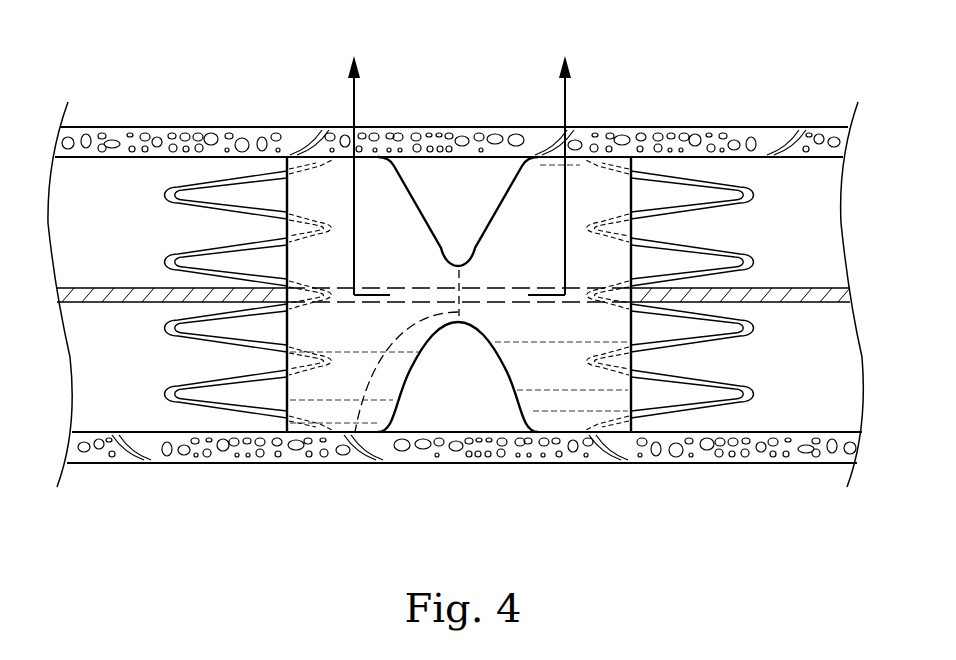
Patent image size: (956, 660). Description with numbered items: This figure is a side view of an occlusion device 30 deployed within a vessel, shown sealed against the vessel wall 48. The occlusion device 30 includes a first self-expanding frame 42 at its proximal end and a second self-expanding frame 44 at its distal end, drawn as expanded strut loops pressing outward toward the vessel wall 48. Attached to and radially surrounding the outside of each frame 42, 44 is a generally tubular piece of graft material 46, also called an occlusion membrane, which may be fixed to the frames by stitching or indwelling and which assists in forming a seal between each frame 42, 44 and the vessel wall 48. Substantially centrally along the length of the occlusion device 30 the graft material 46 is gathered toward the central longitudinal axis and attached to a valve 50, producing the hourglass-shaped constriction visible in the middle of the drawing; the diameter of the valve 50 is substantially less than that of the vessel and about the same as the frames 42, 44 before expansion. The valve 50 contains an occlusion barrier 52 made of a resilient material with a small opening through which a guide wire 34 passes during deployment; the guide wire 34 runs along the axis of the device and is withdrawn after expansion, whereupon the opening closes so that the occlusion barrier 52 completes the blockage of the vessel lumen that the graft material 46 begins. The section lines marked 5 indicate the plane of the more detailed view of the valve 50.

The occlusion device 30 is at (165, 164).
The vessel wall 48 is at (192, 127).
The guide wire 34 is at (113, 303).
The graft material 46 is at (383, 208).
The second self-expanding frame 44 is at (247, 412).
The first self-expanding frame 42 is at (673, 412).
The valve 50 is at (459, 266).
The occlusion barrier 52 is at (355, 432).
The section line 5- 5 is at (459, 155).